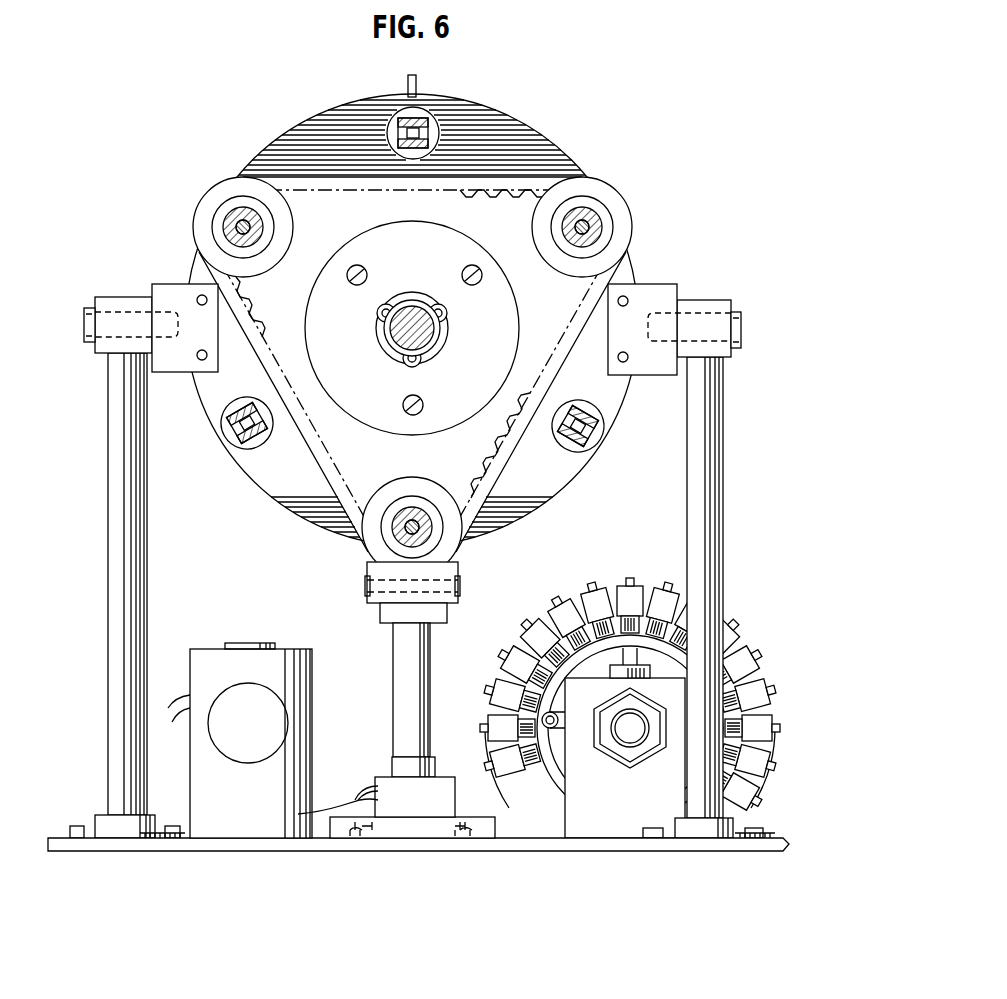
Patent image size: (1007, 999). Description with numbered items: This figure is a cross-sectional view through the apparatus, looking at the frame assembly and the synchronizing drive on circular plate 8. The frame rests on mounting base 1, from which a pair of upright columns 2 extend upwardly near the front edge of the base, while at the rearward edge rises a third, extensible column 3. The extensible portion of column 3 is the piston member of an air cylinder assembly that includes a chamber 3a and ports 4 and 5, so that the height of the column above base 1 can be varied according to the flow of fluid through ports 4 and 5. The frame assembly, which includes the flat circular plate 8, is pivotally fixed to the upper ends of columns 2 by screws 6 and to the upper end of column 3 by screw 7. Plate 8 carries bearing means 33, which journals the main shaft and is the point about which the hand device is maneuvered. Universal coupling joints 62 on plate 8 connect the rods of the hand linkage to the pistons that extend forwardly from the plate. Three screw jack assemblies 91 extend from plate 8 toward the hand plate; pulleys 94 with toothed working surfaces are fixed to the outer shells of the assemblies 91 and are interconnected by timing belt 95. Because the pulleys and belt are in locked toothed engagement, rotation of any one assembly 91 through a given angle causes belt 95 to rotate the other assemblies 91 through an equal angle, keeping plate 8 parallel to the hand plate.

The mounting base 1 is at (447, 850).
The upright columns 2 is at (108, 520).
The extensible column 3 is at (400, 637).
The chamber 3a is at (428, 814).
The port 4 is at (355, 790).
The port 5 is at (345, 805).
The screws 6 is at (85, 325).
The screw 7 is at (458, 590).
The circular plate 8 is at (335, 164).
The bearing means 33 is at (446, 316).
The universal coupling joint 62 is at (400, 113).
The screw jack assemblies 91 is at (221, 222).
The pulleys 94 is at (222, 188).
The timing belt 95 is at (366, 190).